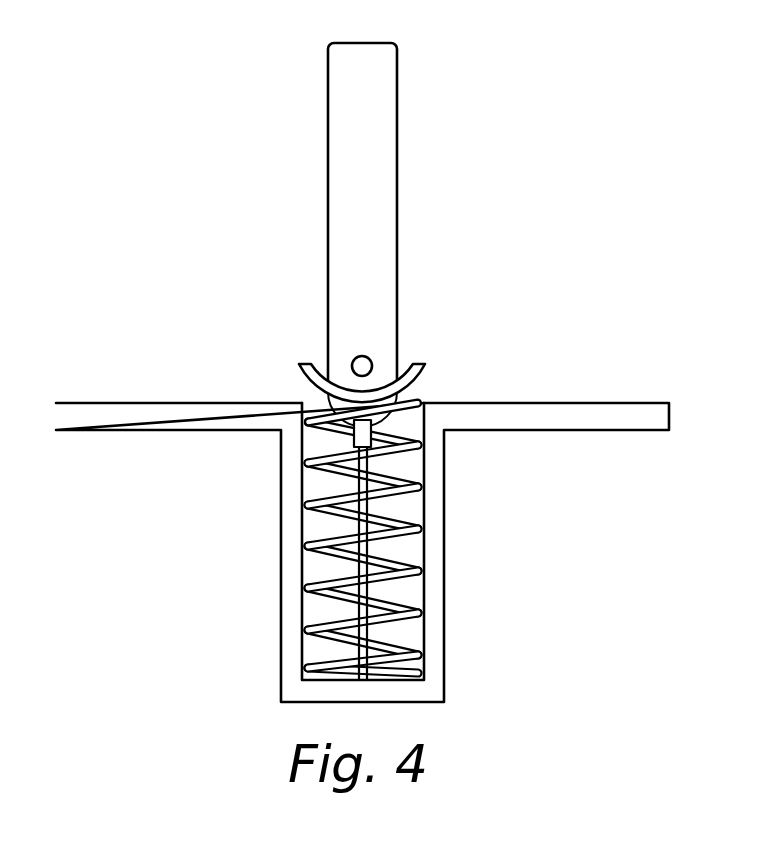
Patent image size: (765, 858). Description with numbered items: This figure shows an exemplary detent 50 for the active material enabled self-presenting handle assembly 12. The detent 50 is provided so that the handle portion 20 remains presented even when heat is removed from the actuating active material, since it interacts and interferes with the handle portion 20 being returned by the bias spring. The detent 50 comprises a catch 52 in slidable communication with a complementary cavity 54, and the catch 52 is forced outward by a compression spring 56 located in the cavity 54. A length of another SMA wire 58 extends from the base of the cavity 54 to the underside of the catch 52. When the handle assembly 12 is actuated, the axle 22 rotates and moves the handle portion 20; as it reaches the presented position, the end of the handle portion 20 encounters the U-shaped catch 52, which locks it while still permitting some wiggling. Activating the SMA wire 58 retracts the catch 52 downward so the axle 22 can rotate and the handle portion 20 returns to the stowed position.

The self-presenting handle assembly 12 is at (396, 235).
The handle portion 20 is at (337, 232).
The axle 22 is at (362, 366).
The detent 50 is at (191, 545).
The catch 52 is at (421, 369).
The cavity 54 is at (318, 610).
The compression spring 56 is at (400, 495).
The SMA wire 58 is at (398, 638).